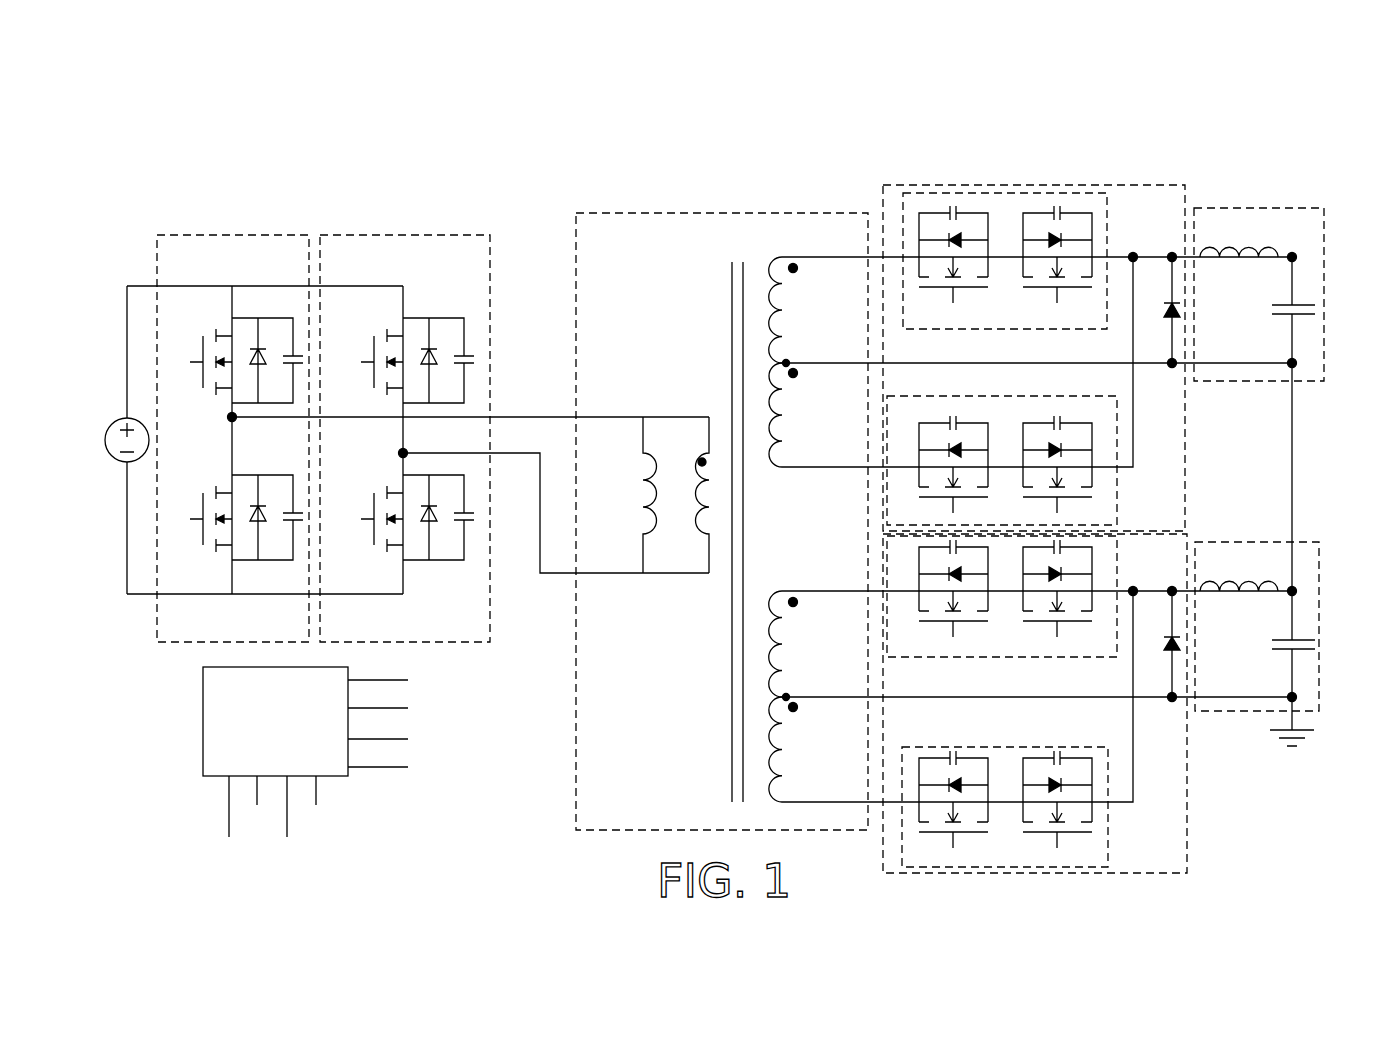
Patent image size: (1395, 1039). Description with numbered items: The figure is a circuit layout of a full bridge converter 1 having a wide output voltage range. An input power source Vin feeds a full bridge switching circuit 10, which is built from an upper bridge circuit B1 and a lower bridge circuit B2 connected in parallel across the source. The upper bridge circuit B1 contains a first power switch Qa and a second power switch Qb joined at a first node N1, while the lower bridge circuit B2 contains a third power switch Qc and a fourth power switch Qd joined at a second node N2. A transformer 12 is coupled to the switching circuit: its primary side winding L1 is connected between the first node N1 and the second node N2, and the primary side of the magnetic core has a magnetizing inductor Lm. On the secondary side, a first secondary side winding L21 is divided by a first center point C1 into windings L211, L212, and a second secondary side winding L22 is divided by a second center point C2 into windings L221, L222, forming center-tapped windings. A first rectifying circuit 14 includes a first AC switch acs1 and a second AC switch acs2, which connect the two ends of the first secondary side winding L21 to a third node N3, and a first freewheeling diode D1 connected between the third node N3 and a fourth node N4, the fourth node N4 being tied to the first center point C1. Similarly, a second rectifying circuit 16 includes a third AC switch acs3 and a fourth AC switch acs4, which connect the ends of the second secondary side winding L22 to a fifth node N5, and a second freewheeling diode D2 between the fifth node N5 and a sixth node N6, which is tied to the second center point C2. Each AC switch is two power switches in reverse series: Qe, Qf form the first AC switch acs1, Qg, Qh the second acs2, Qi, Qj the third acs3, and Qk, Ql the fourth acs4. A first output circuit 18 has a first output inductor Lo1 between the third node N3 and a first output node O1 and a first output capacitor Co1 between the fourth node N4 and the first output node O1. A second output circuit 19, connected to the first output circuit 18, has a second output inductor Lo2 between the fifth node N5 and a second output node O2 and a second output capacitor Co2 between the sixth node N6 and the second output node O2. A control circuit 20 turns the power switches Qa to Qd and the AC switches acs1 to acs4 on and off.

The full bridge converter 1 is at (104, 150).
The full bridge switching circuit 10 is at (425, 143).
The upper bridge circuit B1 is at (215, 235).
The lower bridge circuit B2 is at (408, 235).
The transformer 12 is at (775, 213).
The first rectifying circuit 14 is at (1058, 185).
The second rectifying circuit 16 is at (1187, 790).
The first output circuit 18 is at (1254, 208).
The second output circuit 19 is at (1254, 542).
The control circuit 20 is at (203, 722).
The input power source Vin is at (105, 423).
The first power switch Qa is at (234, 366).
The second power switch Qb is at (234, 531).
The third power switch Qc is at (400, 360).
The fourth power switch Qd is at (416, 531).
The first node N1 is at (450, 431).
The second node N2 is at (534, 507).
The magnetizing inductor Lm is at (622, 495).
The primary side winding L1 is at (692, 495).
The first secondary side winding L21 is at (672, 38).
The winding L211 is at (773, 201).
The winding L212 is at (773, 283).
The second secondary side winding L22 is at (857, 38).
The winding L221 is at (851, 368).
The winding L222 is at (851, 450).
The first center point C1 is at (803, 349).
The second center point C2 is at (803, 682).
The first AC switch acs1 is at (998, 193).
The second AC switch acs2 is at (1117, 505).
The third AC switch acs3 is at (888, 552).
The fourth AC switch acs4 is at (1108, 840).
The power switch Qe is at (948, 264).
The power switch Qf is at (1052, 264).
The power switch Qg is at (950, 469).
The power switch Qh is at (1056, 469).
The power switch Qi is at (946, 597).
The power switch Qj is at (1050, 597).
The power switch Qk is at (946, 807).
The power switch Ql is at (1050, 807).
The third node N3 is at (1164, 242).
The fourth node N4 is at (1164, 378).
The fifth node N5 is at (1164, 577).
The sixth node N6 is at (1164, 714).
The first freewheeling diode D1 is at (1158, 310).
The second freewheeling diode D2 is at (1158, 644).
The first output inductor Lo1 is at (1239, 238).
The second output inductor Lo2 is at (1239, 604).
The first output capacitor Co1 is at (1327, 312).
The second output capacitor Co2 is at (1313, 646).
The first output node O1 is at (1296, 241).
The second output node O2 is at (1275, 572).